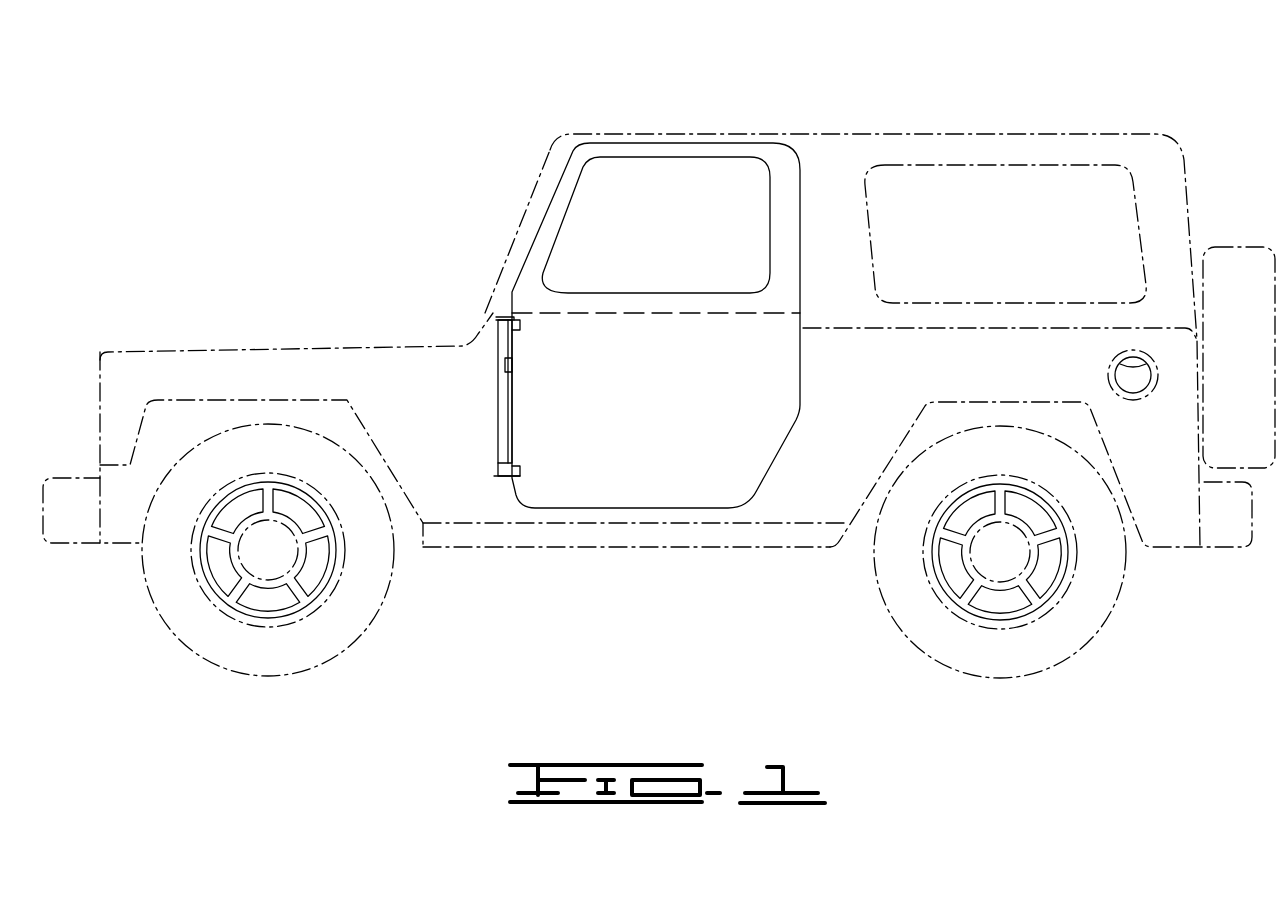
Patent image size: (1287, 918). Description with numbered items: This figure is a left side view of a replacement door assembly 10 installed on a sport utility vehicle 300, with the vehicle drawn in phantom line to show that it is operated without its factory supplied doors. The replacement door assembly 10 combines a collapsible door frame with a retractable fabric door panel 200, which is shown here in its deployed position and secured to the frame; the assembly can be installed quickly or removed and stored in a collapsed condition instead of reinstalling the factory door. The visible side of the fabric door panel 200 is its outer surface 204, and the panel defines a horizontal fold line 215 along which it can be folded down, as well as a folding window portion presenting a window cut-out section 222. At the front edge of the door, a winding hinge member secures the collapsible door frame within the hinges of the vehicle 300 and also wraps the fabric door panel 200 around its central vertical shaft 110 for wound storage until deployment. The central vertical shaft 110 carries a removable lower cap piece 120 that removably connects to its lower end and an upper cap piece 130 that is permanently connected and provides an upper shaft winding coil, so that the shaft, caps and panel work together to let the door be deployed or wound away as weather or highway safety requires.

The replacement door assembly 10 is at (652, 370).
The central vertical shaft 110 is at (504, 456).
The removable lower cap piece 120 is at (514, 480).
The upper cap piece 130 is at (503, 316).
The fabric door panel 200 is at (604, 360).
The outer surface 204 is at (643, 493).
The horizontal fold line 215 is at (597, 312).
The window cut-out section 222 is at (645, 185).
The sport utility vehicle 300 is at (152, 352).